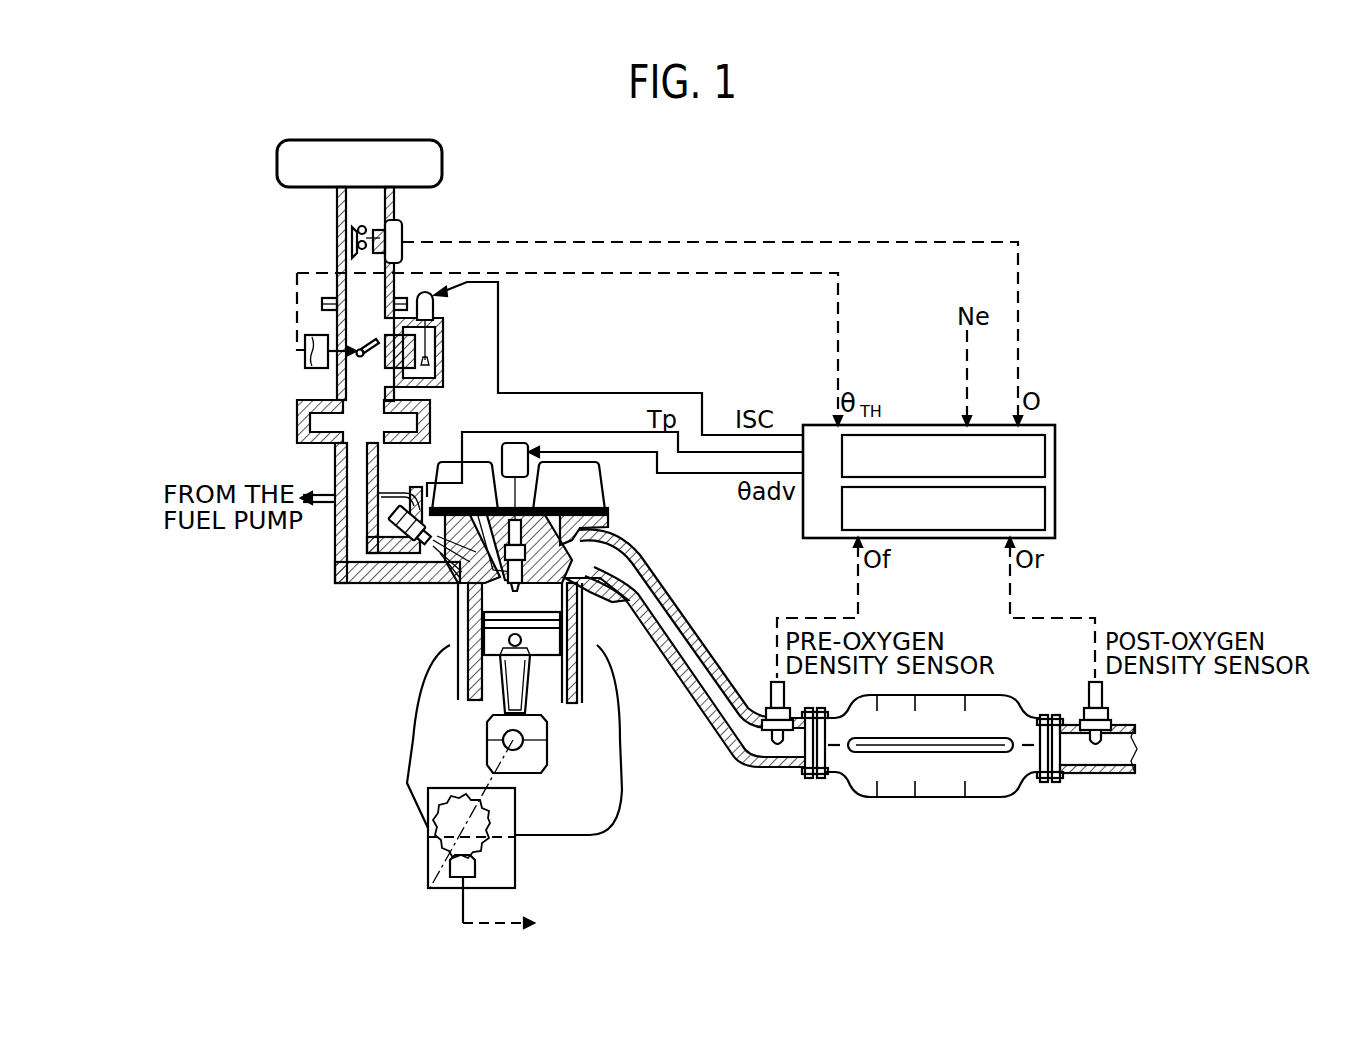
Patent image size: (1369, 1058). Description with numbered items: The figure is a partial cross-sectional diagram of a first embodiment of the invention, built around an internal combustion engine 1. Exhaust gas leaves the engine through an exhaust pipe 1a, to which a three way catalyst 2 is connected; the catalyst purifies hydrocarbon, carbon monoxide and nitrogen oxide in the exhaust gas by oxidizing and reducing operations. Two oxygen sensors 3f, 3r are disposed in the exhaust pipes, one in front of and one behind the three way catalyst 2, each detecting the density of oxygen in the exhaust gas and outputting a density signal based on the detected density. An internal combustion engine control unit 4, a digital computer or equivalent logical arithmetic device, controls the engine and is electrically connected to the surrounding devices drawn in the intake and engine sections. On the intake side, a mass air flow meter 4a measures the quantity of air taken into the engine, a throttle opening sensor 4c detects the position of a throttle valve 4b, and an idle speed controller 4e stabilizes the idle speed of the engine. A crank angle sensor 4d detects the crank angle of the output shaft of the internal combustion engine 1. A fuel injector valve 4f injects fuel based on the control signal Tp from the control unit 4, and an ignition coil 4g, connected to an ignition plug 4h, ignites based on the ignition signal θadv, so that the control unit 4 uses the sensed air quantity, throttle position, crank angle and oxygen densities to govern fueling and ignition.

The internal combustion engine 1 is at (600, 800).
The exhaust pipe 1a is at (747, 737).
The three way catalyst 2 is at (997, 795).
The oxygen sensor 3f is at (771, 688).
The oxygen sensor 3r is at (1106, 708).
The internal combustion engine control unit 4 is at (1055, 510).
The mass air flow meter 4a is at (402, 230).
The throttle valve 4b is at (358, 362).
The throttle opening sensor 4c is at (318, 333).
The crank angle sensor 4d is at (503, 867).
The idle speed controller 4e is at (433, 305).
The fuel injector valve 4f is at (427, 553).
The ignition coil 4g is at (505, 445).
The ignition plug 4h is at (527, 592).